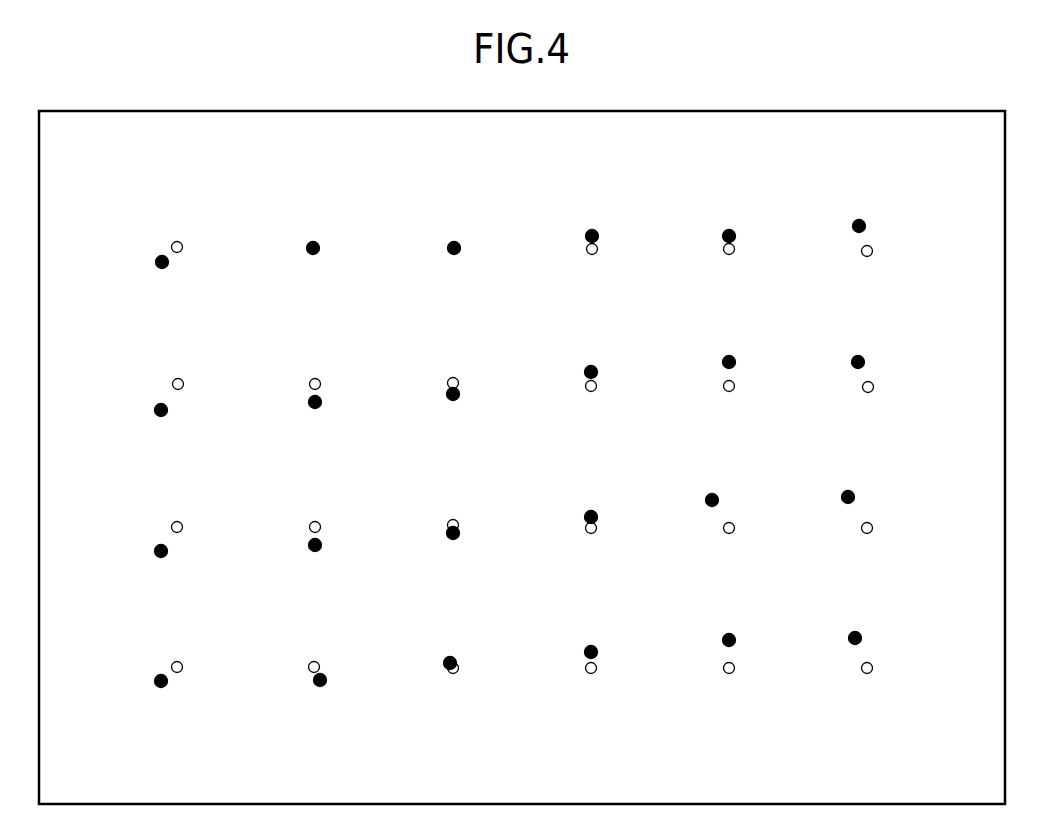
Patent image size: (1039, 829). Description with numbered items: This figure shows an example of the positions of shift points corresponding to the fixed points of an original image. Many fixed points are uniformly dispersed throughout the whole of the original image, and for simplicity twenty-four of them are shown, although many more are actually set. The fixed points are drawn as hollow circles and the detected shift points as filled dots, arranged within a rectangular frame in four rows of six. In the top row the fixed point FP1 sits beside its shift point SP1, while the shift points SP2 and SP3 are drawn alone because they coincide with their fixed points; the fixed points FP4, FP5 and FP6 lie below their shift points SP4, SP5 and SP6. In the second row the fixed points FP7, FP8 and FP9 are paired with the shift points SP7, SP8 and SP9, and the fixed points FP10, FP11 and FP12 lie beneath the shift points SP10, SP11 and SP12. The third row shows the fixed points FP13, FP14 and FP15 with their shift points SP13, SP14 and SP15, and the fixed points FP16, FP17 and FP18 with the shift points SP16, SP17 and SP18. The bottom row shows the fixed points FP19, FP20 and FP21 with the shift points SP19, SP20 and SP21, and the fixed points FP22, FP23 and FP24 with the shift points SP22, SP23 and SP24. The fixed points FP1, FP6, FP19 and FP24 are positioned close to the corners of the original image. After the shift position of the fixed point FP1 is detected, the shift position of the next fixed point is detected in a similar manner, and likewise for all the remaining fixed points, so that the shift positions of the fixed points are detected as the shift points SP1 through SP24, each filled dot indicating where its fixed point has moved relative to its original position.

The shift point SP1 is at (155, 262).
The fixed point FP1 is at (177, 241).
The shift point SP2 is at (306, 248).
The shift point SP3 is at (447, 248).
The shift point SP4 is at (592, 229).
The fixed point FP4 is at (598, 249).
The shift point SP5 is at (729, 229).
The fixed point FP5 is at (735, 249).
The shift point SP6 is at (859, 219).
The fixed point FP6 is at (873, 251).
The shift point SP7 is at (154, 410).
The fixed point FP7 is at (183, 380).
The shift point SP8 is at (322, 403).
The fixed point FP8 is at (320, 380).
The shift point SP9 is at (460, 395).
The fixed point FP9 is at (458, 379).
The shift point SP10 is at (598, 371).
The fixed point FP10 is at (597, 386).
The shift point SP11 is at (736, 361).
The fixed point FP11 is at (735, 386).
The shift point SP12 is at (865, 361).
The fixed point FP12 is at (874, 387).
The shift point SP13 is at (154, 551).
The fixed point FP13 is at (182, 523).
The shift point SP14 is at (322, 546).
The fixed point FP14 is at (320, 523).
The shift point SP15 is at (460, 534).
The fixed point FP15 is at (458, 521).
The shift point SP16 is at (598, 516).
The fixed point FP16 is at (597, 528).
The shift point SP17 is at (719, 499).
The fixed point FP17 is at (735, 528).
The shift point SP18 is at (855, 496).
The fixed point FP18 is at (873, 528).
The shift point SP19 is at (154, 681).
The fixed point FP19 is at (182, 663).
The shift point SP20 is at (327, 681).
The fixed point FP20 is at (319, 663).
The shift point SP21 is at (457, 661).
The fixed point FP21 is at (459, 672).
The shift point SP22 is at (598, 651).
The fixed point FP22 is at (597, 668).
The shift point SP23 is at (736, 639).
The fixed point FP23 is at (735, 668).
The shift point SP24 is at (862, 637).
The fixed point FP24 is at (873, 668).